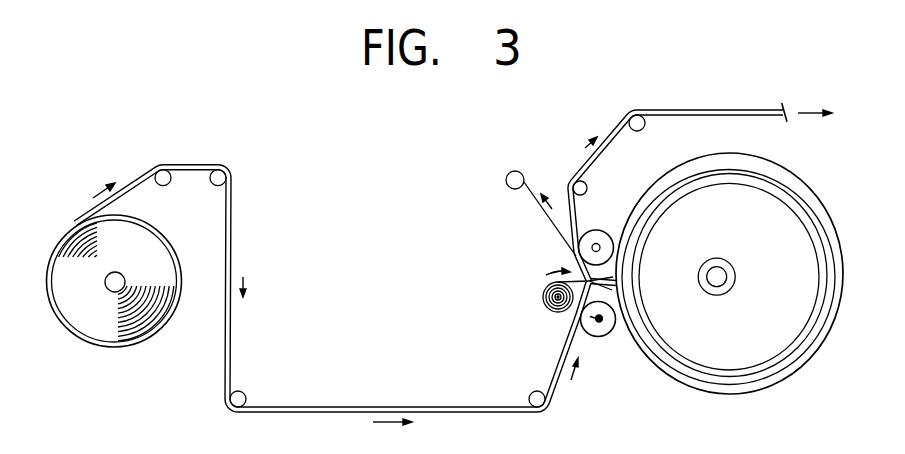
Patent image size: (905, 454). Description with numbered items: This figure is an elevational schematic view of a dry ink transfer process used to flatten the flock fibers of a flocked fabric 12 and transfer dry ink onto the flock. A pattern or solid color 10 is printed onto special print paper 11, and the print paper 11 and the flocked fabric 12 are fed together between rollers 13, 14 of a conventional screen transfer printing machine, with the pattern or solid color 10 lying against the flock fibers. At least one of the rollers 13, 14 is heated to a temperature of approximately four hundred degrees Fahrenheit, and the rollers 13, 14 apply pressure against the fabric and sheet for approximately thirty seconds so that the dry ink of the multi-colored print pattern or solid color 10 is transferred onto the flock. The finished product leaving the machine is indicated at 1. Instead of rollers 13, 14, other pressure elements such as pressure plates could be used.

The laminated product tape 1 is at (730, 110).
The pattern or solid color 10 is at (574, 318).
The print paper 11 is at (548, 216).
The flocked fabric 12 is at (93, 343).
The roller 13 is at (768, 388).
The roller 14 is at (593, 231).